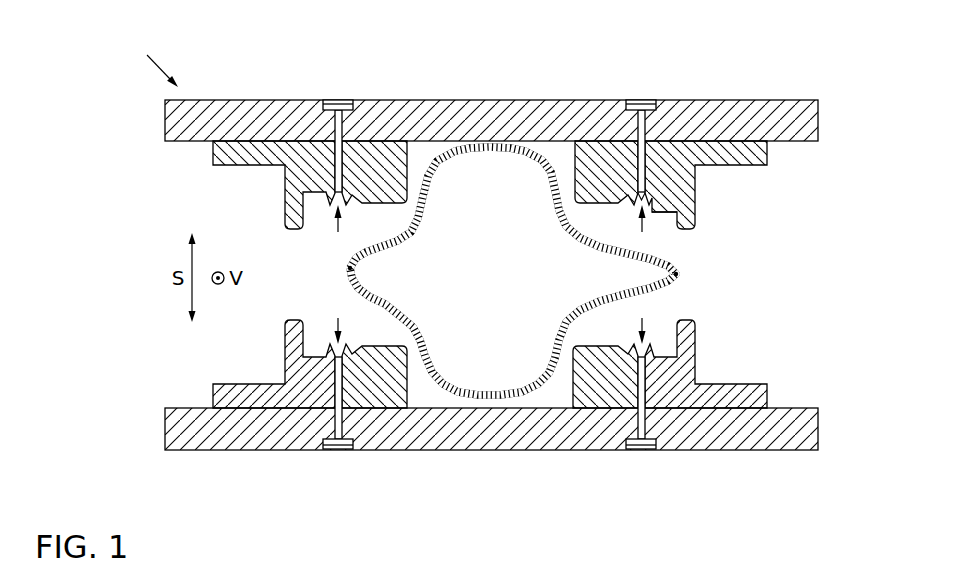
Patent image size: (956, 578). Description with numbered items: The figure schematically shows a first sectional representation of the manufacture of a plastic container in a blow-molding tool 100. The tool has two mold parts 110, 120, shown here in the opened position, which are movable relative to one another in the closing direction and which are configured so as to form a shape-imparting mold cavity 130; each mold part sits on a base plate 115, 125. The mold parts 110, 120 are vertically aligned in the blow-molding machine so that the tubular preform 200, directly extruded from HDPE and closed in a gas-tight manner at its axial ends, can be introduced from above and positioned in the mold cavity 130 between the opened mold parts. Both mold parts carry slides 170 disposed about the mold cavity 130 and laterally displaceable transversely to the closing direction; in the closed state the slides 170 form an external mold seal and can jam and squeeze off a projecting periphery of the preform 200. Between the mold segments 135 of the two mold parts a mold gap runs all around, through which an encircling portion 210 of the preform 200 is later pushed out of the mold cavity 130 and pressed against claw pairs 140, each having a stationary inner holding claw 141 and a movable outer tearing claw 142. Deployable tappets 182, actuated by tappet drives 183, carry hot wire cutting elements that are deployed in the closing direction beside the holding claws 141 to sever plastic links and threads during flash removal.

The blow-molding tool 100 is at (144, 58).
The mold part 110 is at (153, 100).
The base plate 115 is at (765, 101).
The mold part 120 is at (153, 322).
The base plate 125 is at (778, 438).
The mold cavity 130 is at (555, 158).
The mold segment 135 is at (377, 197).
The claw pair 140 is at (642, 318).
The holding claw 141 is at (640, 196).
The tearing claw 142 is at (678, 213).
The slide 170 is at (232, 157).
The tappet 182 is at (338, 132).
The tappet drive 183 is at (353, 118).
The preform 200 is at (493, 396).
The portion 210 is at (349, 268).